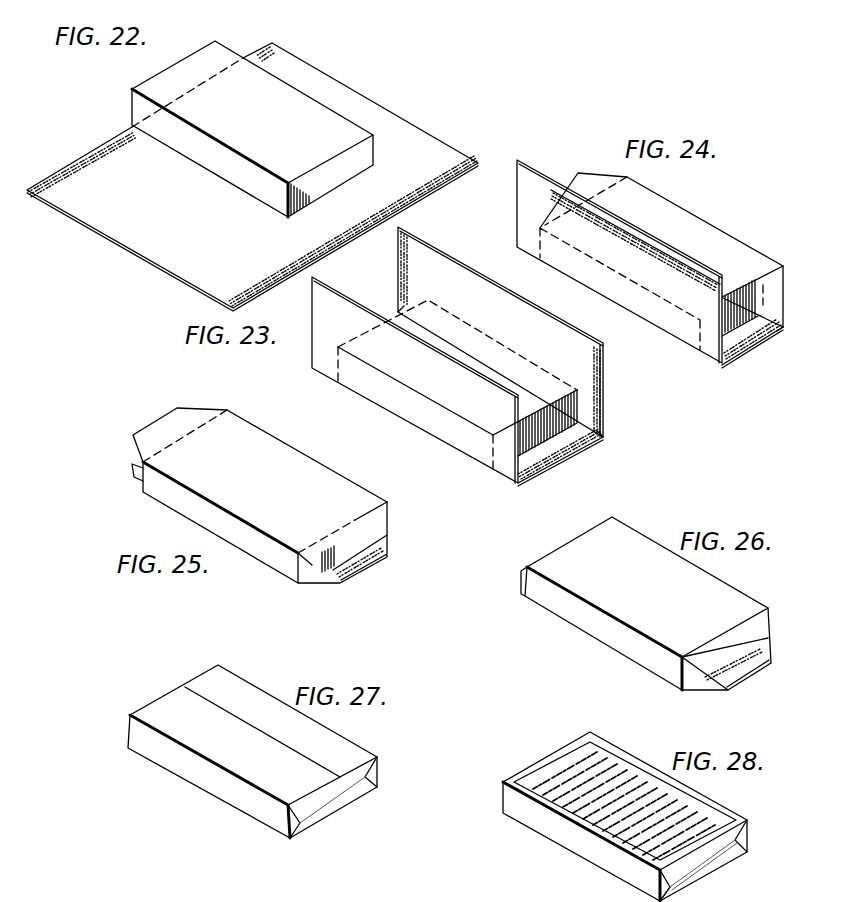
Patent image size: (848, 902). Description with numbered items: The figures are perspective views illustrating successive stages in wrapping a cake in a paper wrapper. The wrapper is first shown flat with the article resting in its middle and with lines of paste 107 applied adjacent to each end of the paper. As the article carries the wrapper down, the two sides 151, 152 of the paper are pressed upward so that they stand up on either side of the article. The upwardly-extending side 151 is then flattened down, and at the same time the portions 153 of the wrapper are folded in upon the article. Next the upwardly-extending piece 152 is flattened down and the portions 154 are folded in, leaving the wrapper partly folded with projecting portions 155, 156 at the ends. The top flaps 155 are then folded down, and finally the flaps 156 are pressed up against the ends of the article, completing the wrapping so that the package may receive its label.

In FIG. 22, the paste 107 is at (272, 46).
In FIG. 23, the paste 107 is at (410, 255).
In FIG. 24, the paste 107 is at (763, 343).
In FIG. 25, the paste 107 is at (367, 560).
In FIG. 26, the paste 107 is at (760, 670).
In FIG. 22, the side of the wrapper 151 is at (352, 88).
In FIG. 23, the side of the wrapper 151 is at (508, 290).
In FIG. 24, the side of the wrapper 151 is at (645, 246).
In FIG. 25, the side of the wrapper 151 is at (265, 496).
In FIG. 22, the side of the wrapper 152 is at (122, 255).
In FIG. 23, the side of the wrapper 152 is at (435, 348).
In FIG. 25, the side of the wrapper 152 is at (274, 520).
In FIG. 23, the wrapper portion 153 is at (405, 303).
In FIG. 24, the wrapper portion 153 is at (773, 310).
In FIG. 25, the wrapper portion 153 is at (383, 537).
In FIG. 23, the wrapper portion 154 is at (323, 350).
In FIG. 24, the wrapper portion 154 is at (527, 240).
In FIG. 25, the wrapper portion 154 is at (140, 477).
In FIG. 25, the top flap 155 is at (157, 427).
In FIG. 26, the top flap 155 is at (723, 645).
In FIG. 25, the end flap 156 is at (137, 463).
In FIG. 26, the end flap 156 is at (735, 683).
In FIG. 27, the end flap 156 is at (328, 797).
In FIG. 28, the end flap 156 is at (707, 858).